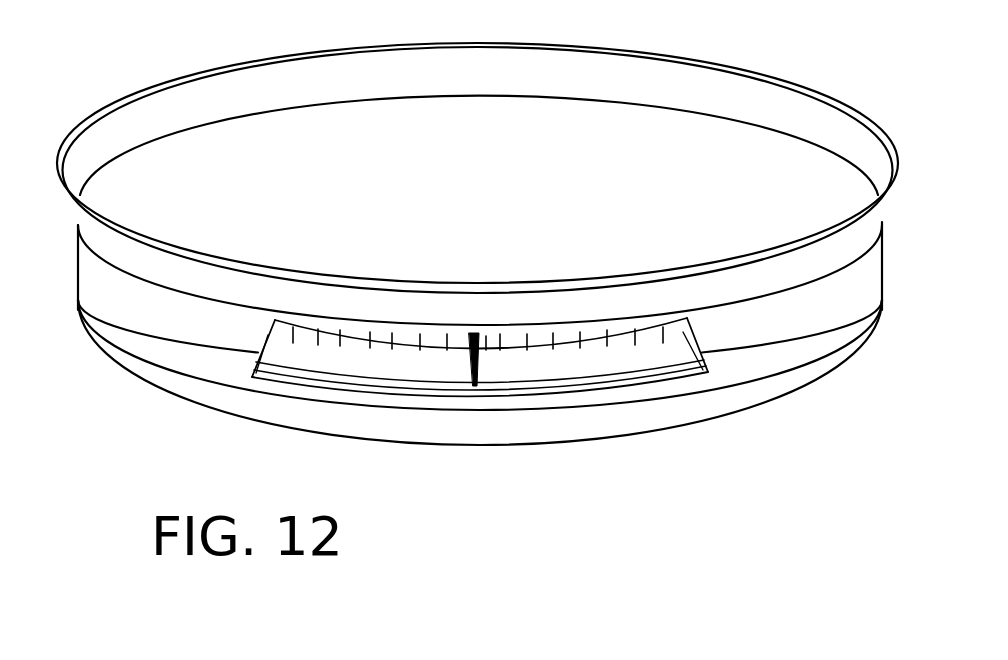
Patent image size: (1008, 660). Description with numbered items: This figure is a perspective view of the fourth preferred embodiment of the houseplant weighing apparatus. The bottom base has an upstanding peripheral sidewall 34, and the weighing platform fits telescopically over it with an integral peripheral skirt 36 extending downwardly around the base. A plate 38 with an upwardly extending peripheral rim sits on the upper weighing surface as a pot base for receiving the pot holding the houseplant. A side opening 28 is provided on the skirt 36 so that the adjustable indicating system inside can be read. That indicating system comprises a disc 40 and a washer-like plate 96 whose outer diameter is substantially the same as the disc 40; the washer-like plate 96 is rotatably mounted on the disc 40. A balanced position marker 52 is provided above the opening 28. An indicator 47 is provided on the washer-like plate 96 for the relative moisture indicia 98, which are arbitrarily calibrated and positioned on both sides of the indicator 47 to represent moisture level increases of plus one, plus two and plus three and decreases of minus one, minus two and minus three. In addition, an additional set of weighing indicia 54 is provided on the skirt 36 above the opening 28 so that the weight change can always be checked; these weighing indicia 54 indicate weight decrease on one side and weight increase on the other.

The side opening 28 is at (275, 370).
The peripheral sidewall 34 is at (768, 388).
The peripheral skirt 36 is at (120, 313).
The plate 38 is at (668, 130).
The disc 40 is at (703, 355).
The indicator 47 is at (477, 367).
The balanced position marker 52 is at (487, 346).
The weighing indicia 54 is at (362, 338).
The washer-like plate 96 is at (688, 340).
The relative moisture indicia 98 is at (430, 355).